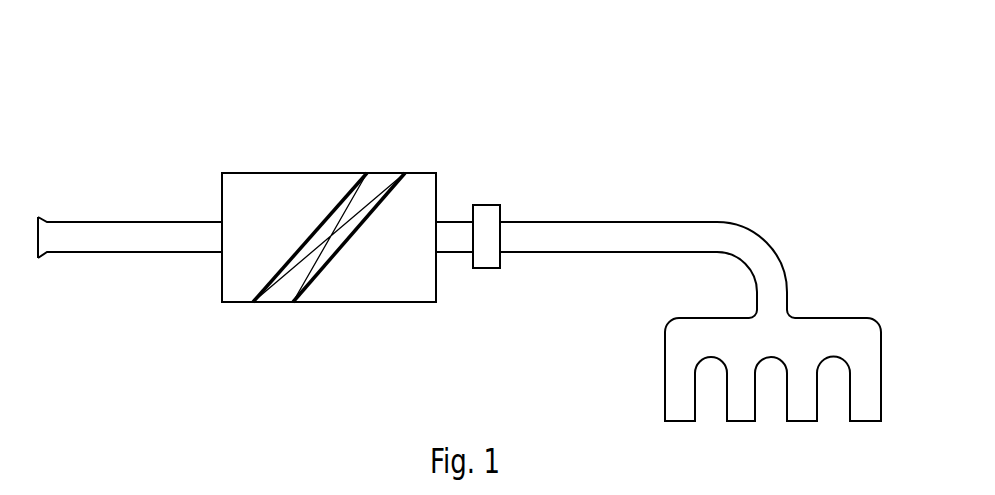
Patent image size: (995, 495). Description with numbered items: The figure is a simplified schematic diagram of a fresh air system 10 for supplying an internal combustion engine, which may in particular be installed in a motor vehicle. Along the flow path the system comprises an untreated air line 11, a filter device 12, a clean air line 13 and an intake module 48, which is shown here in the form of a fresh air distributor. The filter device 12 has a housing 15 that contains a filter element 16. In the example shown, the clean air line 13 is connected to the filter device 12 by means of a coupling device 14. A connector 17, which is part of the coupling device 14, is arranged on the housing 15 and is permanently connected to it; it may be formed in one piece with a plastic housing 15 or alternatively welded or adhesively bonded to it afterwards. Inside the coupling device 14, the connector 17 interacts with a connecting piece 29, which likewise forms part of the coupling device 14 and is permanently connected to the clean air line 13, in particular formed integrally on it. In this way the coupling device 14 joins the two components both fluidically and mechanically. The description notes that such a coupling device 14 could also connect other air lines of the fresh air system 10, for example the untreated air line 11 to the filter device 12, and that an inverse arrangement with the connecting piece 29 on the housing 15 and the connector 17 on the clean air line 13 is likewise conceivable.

The fresh air system 10 is at (764, 143).
The untreated air line 11 is at (117, 228).
The filter device 12 is at (328, 160).
The clean air line 13 is at (623, 228).
The coupling device 14 is at (484, 182).
The housing 15 is at (326, 303).
The filter element 16 is at (358, 227).
The connector 17 is at (452, 230).
The connecting piece 29 is at (516, 228).
The intake module 48 is at (834, 328).